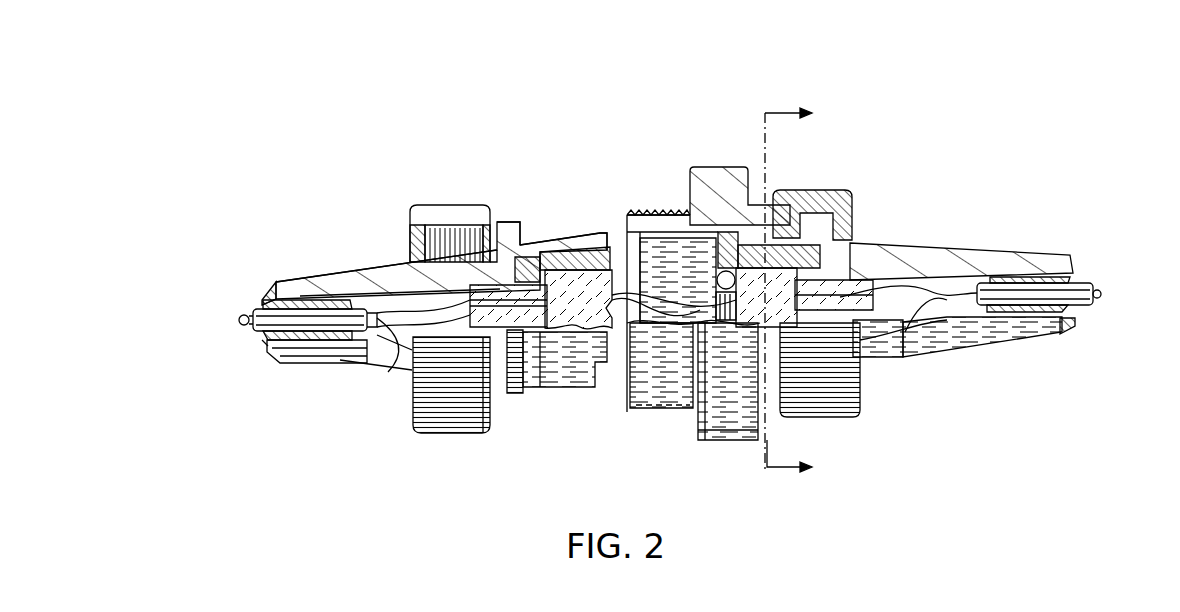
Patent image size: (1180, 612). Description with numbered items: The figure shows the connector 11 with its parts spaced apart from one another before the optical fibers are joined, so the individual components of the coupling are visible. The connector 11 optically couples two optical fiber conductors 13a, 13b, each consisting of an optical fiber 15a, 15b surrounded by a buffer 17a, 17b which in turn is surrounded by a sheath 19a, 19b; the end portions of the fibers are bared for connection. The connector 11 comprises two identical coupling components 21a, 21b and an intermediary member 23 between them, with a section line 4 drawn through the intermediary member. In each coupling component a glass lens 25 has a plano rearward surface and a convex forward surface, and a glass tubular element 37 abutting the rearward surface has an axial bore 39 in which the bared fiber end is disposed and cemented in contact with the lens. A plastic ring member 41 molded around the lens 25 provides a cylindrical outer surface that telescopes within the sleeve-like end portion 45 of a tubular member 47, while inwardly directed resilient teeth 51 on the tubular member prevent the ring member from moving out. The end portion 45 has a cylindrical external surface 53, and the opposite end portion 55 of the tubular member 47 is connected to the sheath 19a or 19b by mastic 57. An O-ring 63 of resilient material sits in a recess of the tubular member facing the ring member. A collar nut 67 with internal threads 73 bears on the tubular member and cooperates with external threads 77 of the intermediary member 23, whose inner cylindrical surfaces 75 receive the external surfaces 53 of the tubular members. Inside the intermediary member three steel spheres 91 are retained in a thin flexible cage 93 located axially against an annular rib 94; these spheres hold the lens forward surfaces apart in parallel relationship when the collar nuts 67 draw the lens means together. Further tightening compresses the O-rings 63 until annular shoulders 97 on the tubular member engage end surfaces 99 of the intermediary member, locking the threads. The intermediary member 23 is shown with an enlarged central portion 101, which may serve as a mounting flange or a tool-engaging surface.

The connector 11 is at (845, 140).
The section line 4- 4 is at (804, 287).
The optical fiber conductor 13a is at (242, 322).
The optical fiber conductor 13b is at (1102, 295).
The optical fiber 15a is at (405, 372).
The optical fiber 15b is at (910, 340).
The buffer 17a is at (378, 350).
The buffer 17b is at (965, 338).
The sheath 19a is at (262, 318).
The sheath 19b is at (1090, 283).
The coupling component 21a is at (455, 176).
The coupling component 21b is at (848, 172).
The intermediary member 23 is at (694, 147).
The lens 25 is at (533, 262).
The tubular element 37 is at (516, 360).
The axial bore 39 is at (560, 350).
The ring member 41 is at (534, 257).
The sleeve-like end portion 45 is at (572, 268).
The tubular member 47 is at (368, 282).
The teeth 51 is at (600, 262).
The external surface 53 is at (520, 240).
The end portion 55 is at (312, 282).
The mastic 57 is at (262, 345).
The O-ring 63 is at (402, 290).
The collar nut 67 is at (462, 432).
The internal threads 73 is at (485, 210).
The inner cylindrical surfaces 75 is at (628, 230).
The external threads 77 is at (650, 323).
The spheres 91 is at (710, 435).
The cage 93 is at (690, 400).
The annular rib 94 is at (728, 258).
The annular shoulders 97 is at (492, 228).
The end surfaces 99 is at (652, 212).
The enlarged central portion 101 is at (748, 430).